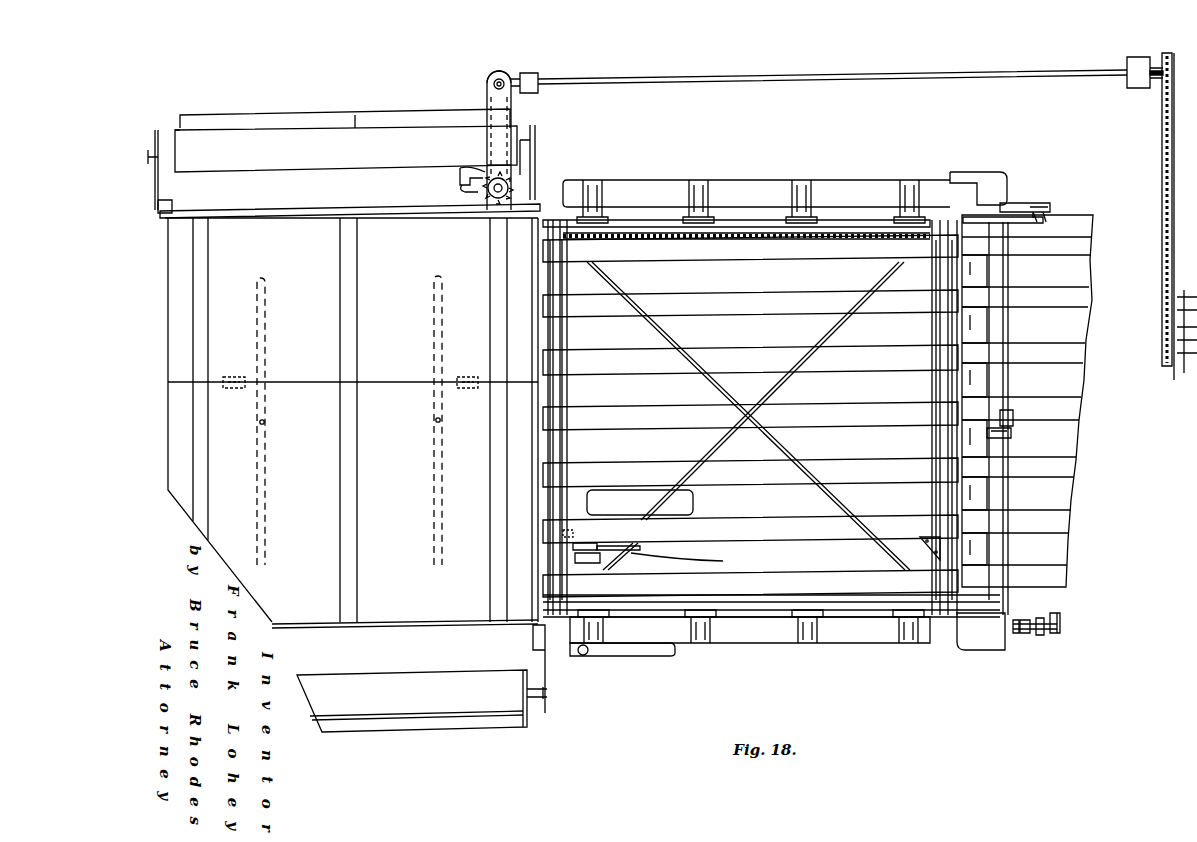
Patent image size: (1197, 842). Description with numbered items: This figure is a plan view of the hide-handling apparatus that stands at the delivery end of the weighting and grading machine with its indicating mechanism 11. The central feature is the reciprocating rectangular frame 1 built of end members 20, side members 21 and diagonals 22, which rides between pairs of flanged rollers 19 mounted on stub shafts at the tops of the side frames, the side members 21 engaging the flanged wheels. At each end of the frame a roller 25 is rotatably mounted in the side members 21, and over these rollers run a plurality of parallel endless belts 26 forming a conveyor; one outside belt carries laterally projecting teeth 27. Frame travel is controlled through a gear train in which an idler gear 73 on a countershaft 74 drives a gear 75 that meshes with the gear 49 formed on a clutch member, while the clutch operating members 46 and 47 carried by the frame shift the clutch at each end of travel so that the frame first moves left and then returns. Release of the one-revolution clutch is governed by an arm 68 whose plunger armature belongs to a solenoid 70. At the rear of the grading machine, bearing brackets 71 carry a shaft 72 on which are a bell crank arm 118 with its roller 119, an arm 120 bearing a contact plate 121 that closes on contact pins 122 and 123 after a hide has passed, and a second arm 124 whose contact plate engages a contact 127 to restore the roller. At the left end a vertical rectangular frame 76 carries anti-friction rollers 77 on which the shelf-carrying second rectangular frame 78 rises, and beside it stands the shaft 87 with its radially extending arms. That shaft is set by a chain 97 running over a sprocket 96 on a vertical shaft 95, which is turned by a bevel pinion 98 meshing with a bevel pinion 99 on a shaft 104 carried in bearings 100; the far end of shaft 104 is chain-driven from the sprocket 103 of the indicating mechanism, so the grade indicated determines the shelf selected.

The gate 1 is at (781, 171).
The indicating mechanism 11 is at (1044, 632).
The flanged pulleys or rollers 19 is at (784, 214).
The end members 20 is at (568, 341).
The side members 21 is at (835, 210).
The diagonals 22 is at (726, 380).
The roller 25 is at (566, 273).
The endless belts 26 is at (701, 301).
The laterally projecting teeth 27 is at (650, 235).
The clutch operating member 46 is at (578, 541).
The clutch operating member 47 is at (924, 541).
The gear 49 is at (590, 562).
The arm 68 is at (601, 657).
The solenoid 70 is at (583, 656).
The bearing brackets 71 is at (992, 225).
The shaft 72 is at (1010, 334).
The idler gear 73 is at (771, 581).
The countershaft 74 is at (631, 553).
The gear 75 is at (634, 556).
The rectangular frame 76 is at (315, 140).
The anti-friction rollers 77 is at (168, 206).
The second rectangular frame 78 is at (300, 216).
The shaft 87 is at (510, 186).
The vertically mounted shaft 95 is at (507, 77).
The sprocket 96 is at (486, 87).
The chain 97 is at (514, 116).
The bevel pinion 98 is at (493, 72).
The bevel pinion 99 is at (522, 78).
The bearings 100 is at (512, 95).
The sprocket 103 is at (1168, 362).
The shaft 104 is at (922, 73).
The bell crank arm 118 is at (1015, 419).
The roller 119 is at (1013, 433).
The arm 120 is at (1019, 204).
The contact plate 121 is at (1044, 206).
The contact pin 122 is at (1037, 224).
The contact pin 123 is at (1047, 224).
The arm 124 is at (1015, 636).
The contact 127 is at (1062, 629).